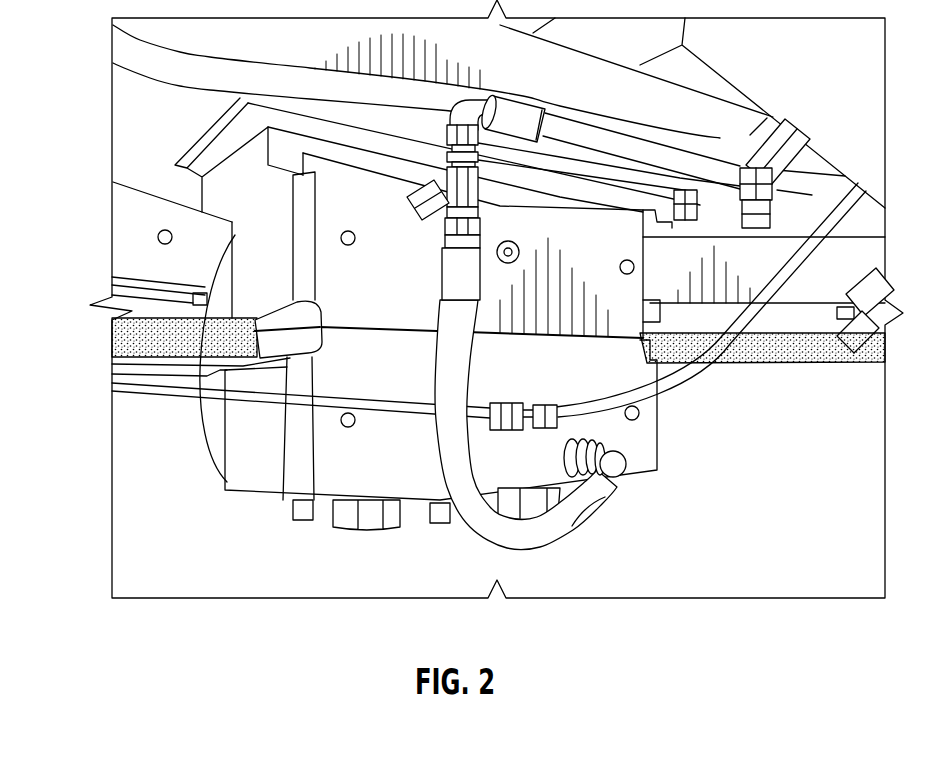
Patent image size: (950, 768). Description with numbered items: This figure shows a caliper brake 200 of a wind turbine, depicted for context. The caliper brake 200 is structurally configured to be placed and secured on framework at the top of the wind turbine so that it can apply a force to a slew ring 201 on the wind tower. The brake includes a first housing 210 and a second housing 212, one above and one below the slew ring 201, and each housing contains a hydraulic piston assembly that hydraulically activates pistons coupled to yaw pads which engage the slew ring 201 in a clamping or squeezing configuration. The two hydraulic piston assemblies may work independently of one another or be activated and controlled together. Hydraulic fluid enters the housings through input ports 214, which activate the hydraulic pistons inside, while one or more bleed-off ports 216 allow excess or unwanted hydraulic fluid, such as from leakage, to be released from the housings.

The caliper brake 200 is at (100, 224).
The slew ring 201 is at (203, 354).
The first housing 210 is at (394, 475).
The second housing 212 is at (413, 285).
The input port 214 is at (413, 198).
The bleed-off port 216 is at (507, 402).